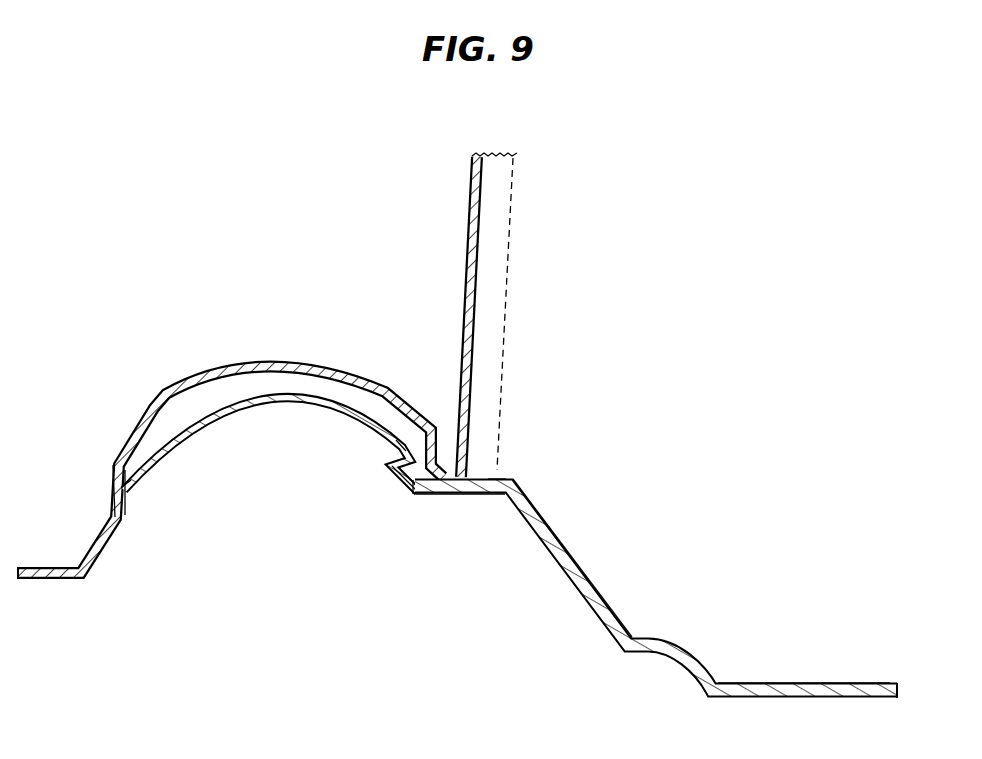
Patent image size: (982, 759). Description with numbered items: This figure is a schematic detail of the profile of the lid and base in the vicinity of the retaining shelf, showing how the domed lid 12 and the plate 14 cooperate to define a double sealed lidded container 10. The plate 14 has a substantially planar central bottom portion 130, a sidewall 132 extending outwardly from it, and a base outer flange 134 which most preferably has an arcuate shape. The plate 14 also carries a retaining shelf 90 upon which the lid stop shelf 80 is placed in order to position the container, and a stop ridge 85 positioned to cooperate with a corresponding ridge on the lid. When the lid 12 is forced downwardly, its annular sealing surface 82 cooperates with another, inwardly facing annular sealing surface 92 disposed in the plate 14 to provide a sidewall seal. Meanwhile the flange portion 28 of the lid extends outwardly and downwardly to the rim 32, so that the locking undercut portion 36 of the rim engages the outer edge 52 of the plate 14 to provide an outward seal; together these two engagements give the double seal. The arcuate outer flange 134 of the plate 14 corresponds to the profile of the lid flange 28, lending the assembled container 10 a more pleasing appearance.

The lidded container 10 is at (230, 383).
The domed lid 12 is at (486, 322).
The plate 14 is at (656, 569).
The flange portion 28 is at (240, 360).
The rim 32 is at (112, 505).
The undercut portion 36 is at (132, 511).
The outer edge 52 is at (127, 490).
The lid stop shelf 80 is at (433, 487).
The annular sealing surface 82 is at (410, 490).
The stop ridge 85 is at (398, 447).
The retaining shelf 90 is at (497, 478).
The annular sealing surface 92 is at (392, 471).
The central bottom portion 130 is at (745, 681).
The sidewall 132 is at (570, 556).
The outer flange 134 is at (225, 415).